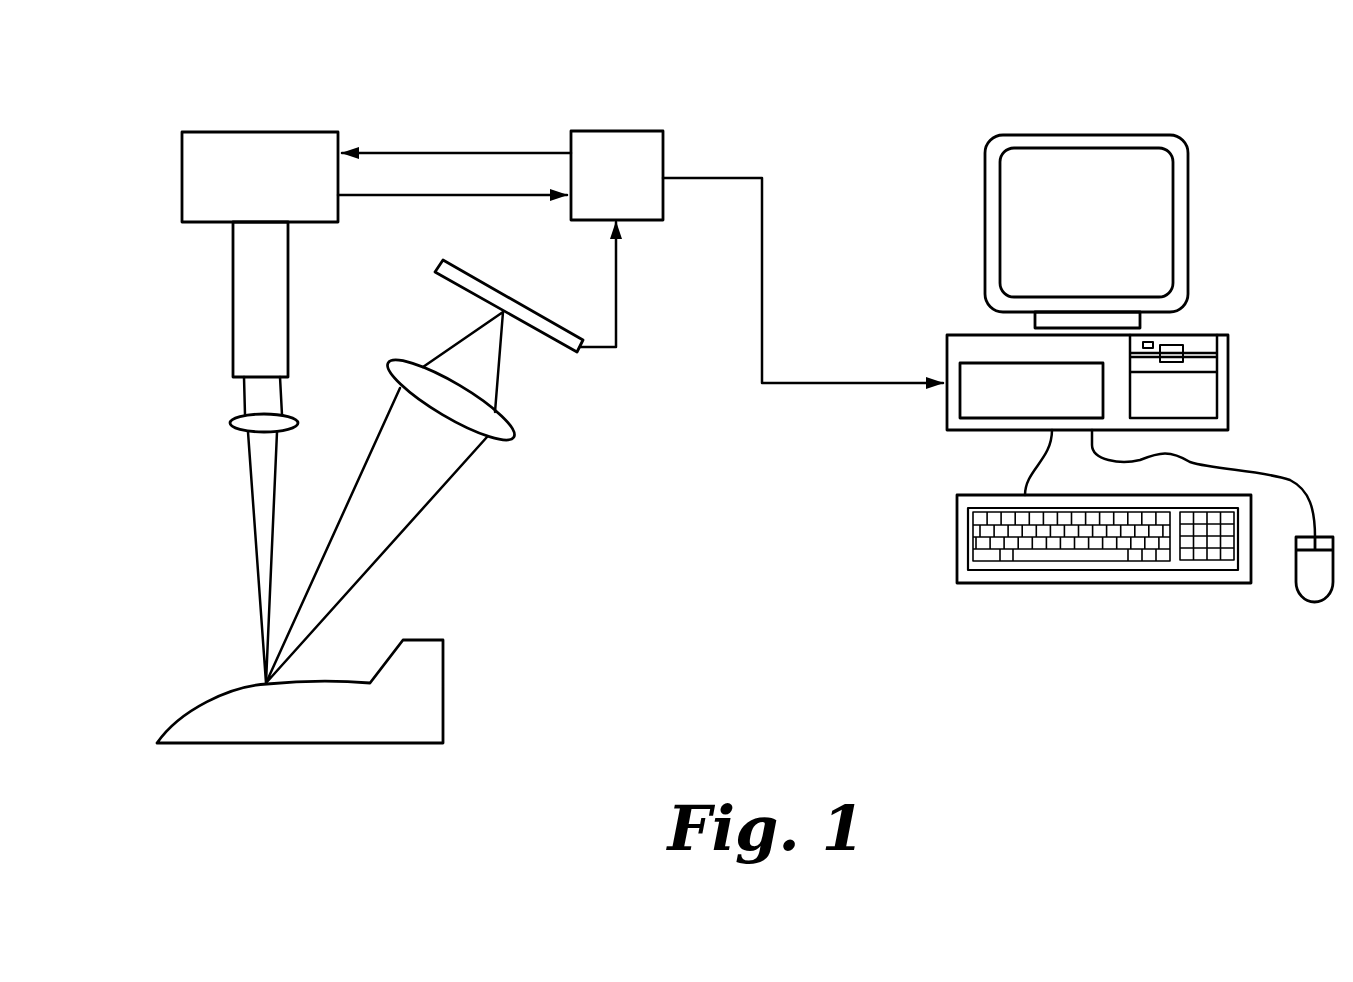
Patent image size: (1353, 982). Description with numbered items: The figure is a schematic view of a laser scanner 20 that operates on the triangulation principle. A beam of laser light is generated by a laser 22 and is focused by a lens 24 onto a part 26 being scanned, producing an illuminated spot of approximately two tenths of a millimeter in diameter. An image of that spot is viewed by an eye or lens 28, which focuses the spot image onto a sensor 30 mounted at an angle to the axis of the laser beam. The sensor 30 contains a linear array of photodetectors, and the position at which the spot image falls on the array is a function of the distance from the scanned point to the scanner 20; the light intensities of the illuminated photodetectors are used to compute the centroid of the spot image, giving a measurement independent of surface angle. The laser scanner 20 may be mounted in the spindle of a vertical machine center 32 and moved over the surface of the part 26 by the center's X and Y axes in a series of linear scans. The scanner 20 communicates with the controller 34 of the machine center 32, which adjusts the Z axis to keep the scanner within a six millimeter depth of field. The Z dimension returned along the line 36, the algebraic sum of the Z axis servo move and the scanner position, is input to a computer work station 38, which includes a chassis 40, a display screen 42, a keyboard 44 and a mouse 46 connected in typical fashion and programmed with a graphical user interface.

The laser scanner 20 is at (574, 541).
The laser 22 is at (288, 304).
The lens 24 is at (230, 423).
The part 26 is at (443, 700).
The lens 28 is at (513, 437).
The sensor 30 is at (532, 310).
The vertical machine center 32 is at (256, 132).
The controller 34 is at (612, 131).
The line 36 is at (710, 178).
The computer work station 38 is at (923, 222).
The chassis 40 is at (947, 352).
The display screen 42 is at (1190, 191).
The keyboard 44 is at (1088, 585).
The mouse 46 is at (1300, 600).